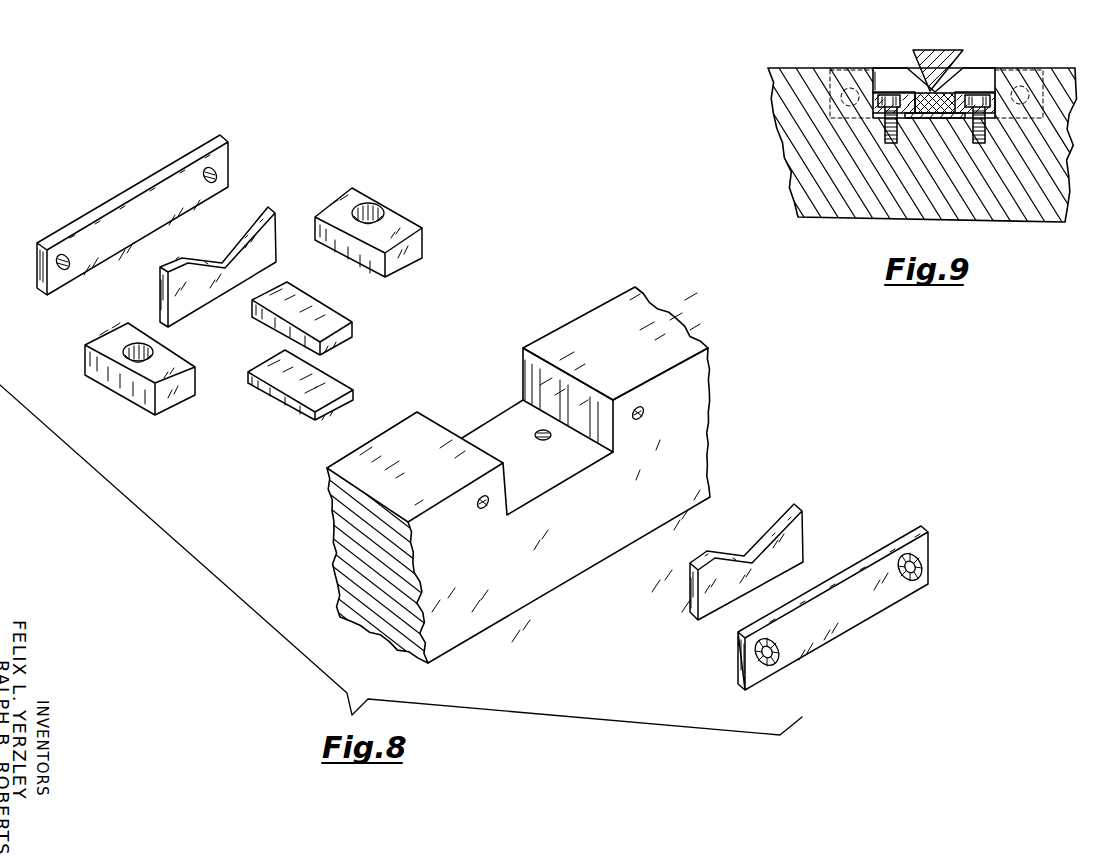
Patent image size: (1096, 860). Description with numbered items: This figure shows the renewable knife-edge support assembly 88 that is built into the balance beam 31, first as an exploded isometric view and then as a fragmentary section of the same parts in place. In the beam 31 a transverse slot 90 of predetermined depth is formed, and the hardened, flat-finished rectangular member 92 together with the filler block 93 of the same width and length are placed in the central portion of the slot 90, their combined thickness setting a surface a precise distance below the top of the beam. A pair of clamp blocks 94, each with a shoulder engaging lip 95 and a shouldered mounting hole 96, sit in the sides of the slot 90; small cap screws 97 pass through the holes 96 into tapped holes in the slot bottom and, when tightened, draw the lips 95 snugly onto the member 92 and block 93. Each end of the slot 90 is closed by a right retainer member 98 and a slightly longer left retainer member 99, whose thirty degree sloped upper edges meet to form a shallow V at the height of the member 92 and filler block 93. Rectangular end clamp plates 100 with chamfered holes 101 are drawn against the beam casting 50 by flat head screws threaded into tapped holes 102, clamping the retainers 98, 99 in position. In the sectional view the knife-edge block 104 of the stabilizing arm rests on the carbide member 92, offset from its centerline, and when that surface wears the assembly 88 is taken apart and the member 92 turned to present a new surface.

In FIG. 8, the beam 31 is at (535, 506).
In FIG. 8, the cast beam 50 is at (702, 363).
In FIG. 8, the knife-edge support assembly 88 is at (124, 140).
In FIG. 9, the knife-edge support assembly 88 is at (886, 43).
In FIG. 8, the transverse slot 90 is at (513, 398).
In FIG. 8, the rectangular member 92 is at (352, 330).
In FIG. 9, the rectangular member 92 is at (942, 93).
In FIG. 8, the filler block 93 is at (340, 383).
In FIG. 9, the filler block 93 is at (937, 123).
In FIG. 8, the clamp blocks 94 is at (273, 306).
In FIG. 9, the clamp blocks 94 is at (990, 100).
In FIG. 8, the shoulder engaging lip 95 is at (387, 270).
In FIG. 8, the shouldered mounting holes 96 is at (382, 208).
In FIG. 9, the cap screws 97 is at (893, 143).
In FIG. 8, the right retainer member 98 is at (488, 413).
In FIG. 9, the right retainer member 98 is at (930, 56).
In FIG. 8, the left retainer member 99 is at (163, 283).
In FIG. 9, the left retainer member 99 is at (880, 78).
In FIG. 8, the end clamp plates 100 is at (506, 413).
In FIG. 9, the end clamp plates 100 is at (912, 72).
In FIG. 8, the chamfered holes 101 is at (217, 176).
In FIG. 8, the tapped holes 102 is at (645, 414).
In FIG. 9, the knife-edge block 104 is at (962, 50).